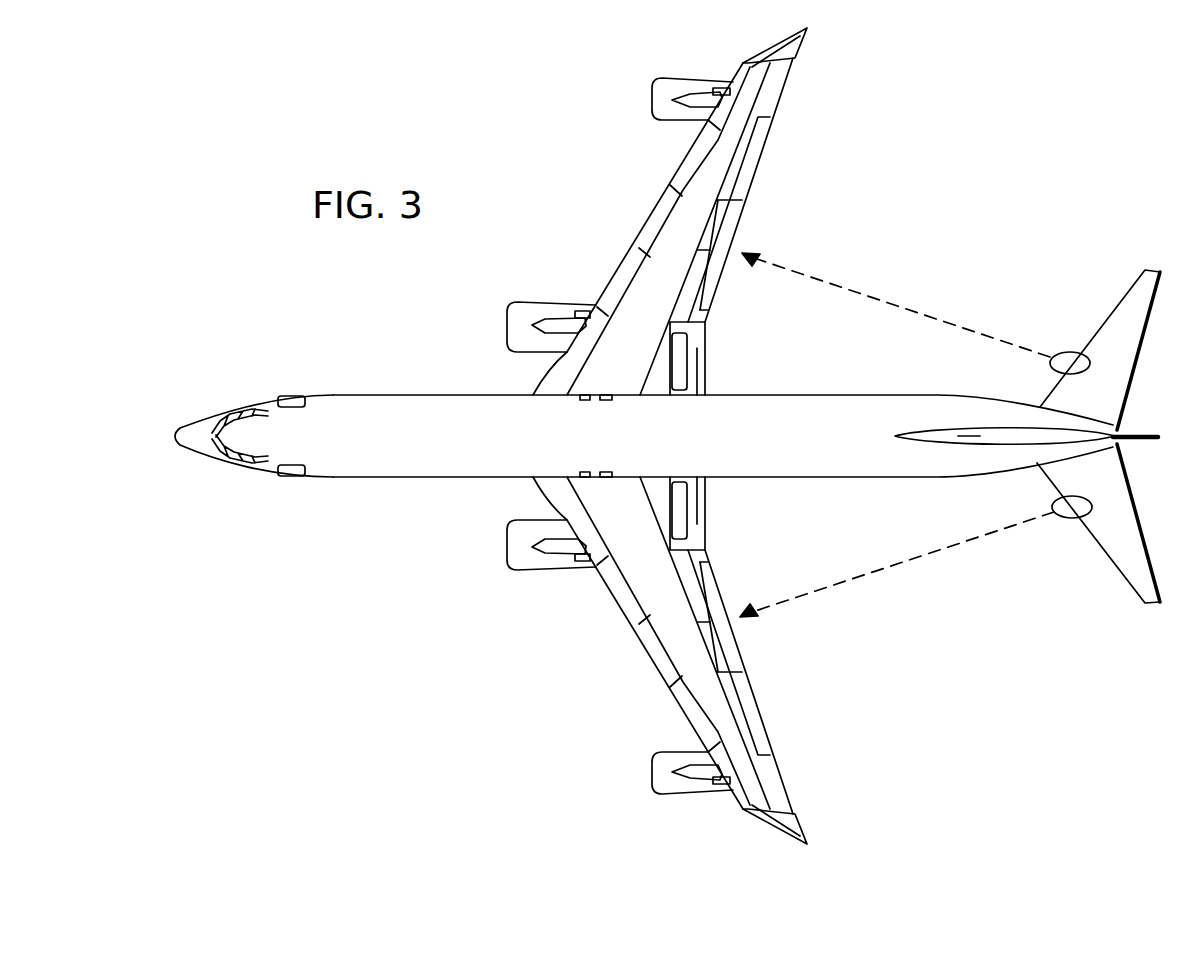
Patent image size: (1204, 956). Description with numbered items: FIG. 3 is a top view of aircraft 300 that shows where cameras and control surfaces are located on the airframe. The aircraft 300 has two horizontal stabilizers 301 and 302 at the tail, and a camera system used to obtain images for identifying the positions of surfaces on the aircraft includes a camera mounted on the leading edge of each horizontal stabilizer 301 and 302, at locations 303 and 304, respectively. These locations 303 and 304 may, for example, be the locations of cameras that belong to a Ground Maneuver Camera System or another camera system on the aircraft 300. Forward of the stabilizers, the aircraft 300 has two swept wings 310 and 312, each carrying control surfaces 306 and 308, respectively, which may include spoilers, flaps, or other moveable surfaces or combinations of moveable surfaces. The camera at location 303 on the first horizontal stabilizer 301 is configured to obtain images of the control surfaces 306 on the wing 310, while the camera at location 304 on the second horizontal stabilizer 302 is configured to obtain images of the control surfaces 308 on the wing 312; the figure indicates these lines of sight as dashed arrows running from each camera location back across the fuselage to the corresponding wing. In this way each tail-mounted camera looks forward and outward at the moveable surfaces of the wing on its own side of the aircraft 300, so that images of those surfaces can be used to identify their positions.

The aircraft 300 is at (322, 306).
The horizontal stabilizer 301 is at (1148, 267).
The horizontal stabilizer 302 is at (1150, 606).
The camera location 303 is at (1063, 352).
The camera location 304 is at (1068, 520).
The control surfaces 306 is at (660, 218).
The control surfaces 308 is at (660, 654).
The wing 310 is at (697, 239).
The wing 312 is at (697, 633).